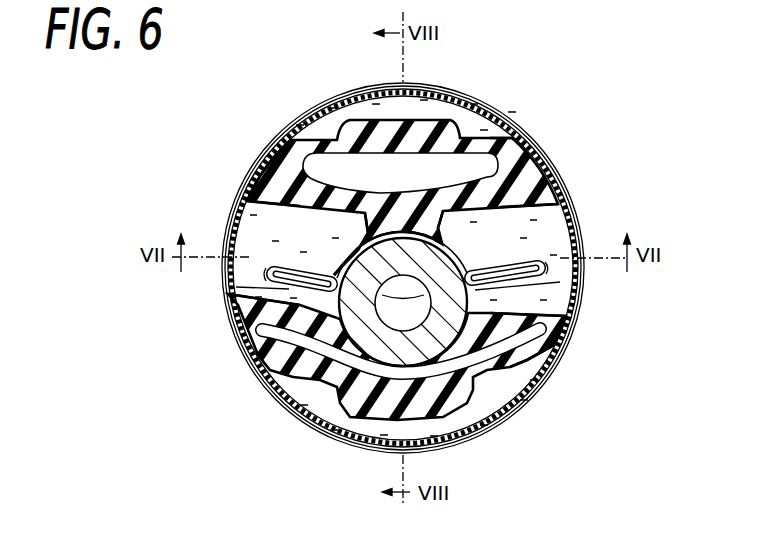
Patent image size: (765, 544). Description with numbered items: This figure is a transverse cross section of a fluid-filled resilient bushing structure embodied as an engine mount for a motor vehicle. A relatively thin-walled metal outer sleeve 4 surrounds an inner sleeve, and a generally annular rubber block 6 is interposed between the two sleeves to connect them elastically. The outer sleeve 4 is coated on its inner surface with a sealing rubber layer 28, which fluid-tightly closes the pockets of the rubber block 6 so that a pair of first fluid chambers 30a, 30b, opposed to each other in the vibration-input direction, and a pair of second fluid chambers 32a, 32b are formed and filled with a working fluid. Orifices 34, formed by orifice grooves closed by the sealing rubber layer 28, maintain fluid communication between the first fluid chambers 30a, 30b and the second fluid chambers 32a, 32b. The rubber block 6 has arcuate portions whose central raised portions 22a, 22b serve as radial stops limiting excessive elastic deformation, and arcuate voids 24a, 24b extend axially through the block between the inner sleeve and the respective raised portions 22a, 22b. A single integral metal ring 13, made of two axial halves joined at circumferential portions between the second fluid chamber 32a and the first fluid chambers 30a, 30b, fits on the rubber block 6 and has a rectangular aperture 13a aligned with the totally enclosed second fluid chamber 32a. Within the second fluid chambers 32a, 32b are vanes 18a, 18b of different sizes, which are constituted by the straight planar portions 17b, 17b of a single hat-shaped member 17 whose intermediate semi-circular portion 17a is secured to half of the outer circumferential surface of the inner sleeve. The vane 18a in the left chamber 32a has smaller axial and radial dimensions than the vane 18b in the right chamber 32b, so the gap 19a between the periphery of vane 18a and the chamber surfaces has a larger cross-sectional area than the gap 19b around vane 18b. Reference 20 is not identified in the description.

The outer sleeve 4 is at (300, 418).
The rubber block 6 is at (277, 172).
The metal ring 13 is at (280, 142).
The rectangular aperture 13a is at (243, 303).
The hat-shaped member 17 is at (447, 235).
The semi-circular portion 17a is at (410, 232).
The straight planar portion 17b is at (298, 266).
The vane 18a is at (268, 258).
The vane 18b is at (548, 258).
The gap 19a is at (263, 262).
The gap 19b is at (548, 277).
The partition wall 20 is at (268, 282).
The raised portion 22a is at (412, 120).
The raised portion 22b is at (356, 403).
The arcuate void 24a is at (374, 167).
The arcuate void 24b is at (452, 374).
The sealing rubber layer 28 is at (272, 390).
The first fluid chamber 30a is at (472, 123).
The first fluid chamber 30b is at (508, 391).
The second fluid chamber 32a is at (262, 196).
The second fluid chamber 32b is at (556, 205).
The orifice 34 is at (507, 160).